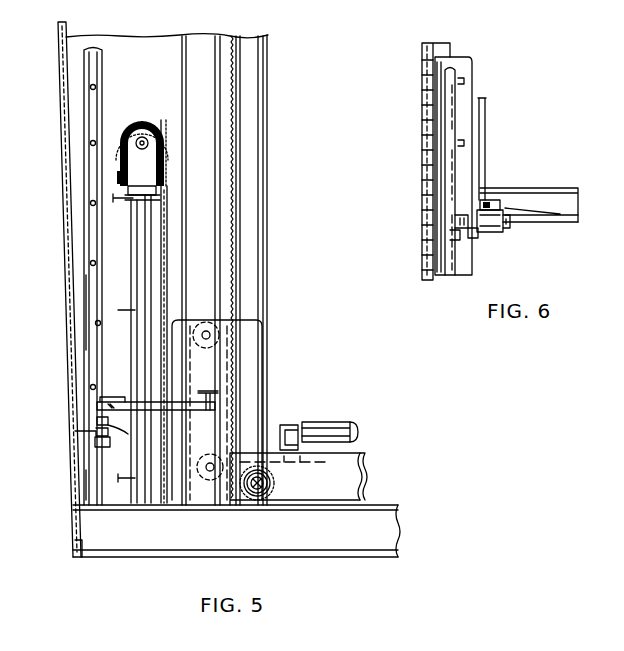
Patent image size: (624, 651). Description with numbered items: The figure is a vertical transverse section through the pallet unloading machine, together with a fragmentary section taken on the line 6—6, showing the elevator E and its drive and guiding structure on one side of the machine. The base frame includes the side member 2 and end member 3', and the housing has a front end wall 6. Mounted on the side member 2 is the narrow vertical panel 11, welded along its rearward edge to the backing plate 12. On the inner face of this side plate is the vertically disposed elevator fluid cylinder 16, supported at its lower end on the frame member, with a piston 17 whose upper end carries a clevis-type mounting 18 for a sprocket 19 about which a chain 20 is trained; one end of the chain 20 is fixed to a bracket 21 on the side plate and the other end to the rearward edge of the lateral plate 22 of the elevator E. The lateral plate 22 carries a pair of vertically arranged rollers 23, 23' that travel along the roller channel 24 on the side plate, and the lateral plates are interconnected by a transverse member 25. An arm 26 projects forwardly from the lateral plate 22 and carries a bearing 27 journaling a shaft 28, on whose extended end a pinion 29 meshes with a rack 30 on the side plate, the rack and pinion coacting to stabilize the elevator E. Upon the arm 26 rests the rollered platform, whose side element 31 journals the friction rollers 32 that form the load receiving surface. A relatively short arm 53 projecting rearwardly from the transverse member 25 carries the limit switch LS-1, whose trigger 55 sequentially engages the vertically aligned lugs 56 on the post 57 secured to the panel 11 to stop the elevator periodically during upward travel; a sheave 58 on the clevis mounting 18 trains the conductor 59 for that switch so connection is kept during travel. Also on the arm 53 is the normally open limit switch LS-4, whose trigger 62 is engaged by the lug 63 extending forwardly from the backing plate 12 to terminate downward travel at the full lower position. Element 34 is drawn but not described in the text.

In FIG. 5, the frame side member 2 is at (395, 524).
In FIG. 5, the frame end member 3' is at (95, 560).
In FIG. 5, the front end wall 6 is at (85, 313).
In FIG. 6, the vertical panel 11 is at (424, 82).
In FIG. 5, the backing plate 12 is at (60, 143).
In FIG. 5, the elevator fluid cylinder 16 is at (162, 226).
In FIG. 6, the elevator fluid cylinder 16 is at (462, 85).
In FIG. 5, the piston 17 is at (133, 181).
In FIG. 5, the clevis-type mounting 18 is at (144, 136).
In FIG. 5, the sprocket 19 is at (126, 132).
In FIG. 5, the chain 20 is at (141, 117).
In FIG. 5, the bracket 21 is at (118, 176).
In FIG. 5, the lateral plate 22 is at (183, 498).
In FIG. 5, the roller 23 is at (236, 398).
In FIG. 5, the roller 23' is at (215, 515).
In FIG. 5, the roller channel 24 is at (206, 178).
In FIG. 5, the transverse member 25 is at (215, 404).
In FIG. 6, the transverse member 25 is at (540, 189).
In FIG. 5, the arm 26 is at (328, 475).
In FIG. 5, the bearing 27 is at (257, 492).
In FIG. 5, the shaft 28 is at (262, 488).
In FIG. 5, the pinion 29 is at (270, 483).
In FIG. 5, the rack 30 is at (232, 243).
In FIG. 5, the side element 31 is at (288, 425).
In FIG. 5, the friction roller 32 is at (330, 424).
In FIG. 5, the outer rail 34 is at (269, 89).
In FIG. 5, the arm 53 is at (120, 400).
In FIG. 6, the arm 53 is at (495, 200).
In FIG. 6, the trigger 55 is at (462, 221).
In FIG. 5, the lug 56 is at (96, 326).
In FIG. 6, the lug 56 is at (455, 236).
In FIG. 5, the post 57 is at (98, 372).
In FIG. 6, the post 57 is at (438, 130).
In FIG. 5, the sheave 58 is at (158, 140).
In FIG. 5, the conductor 59 is at (136, 241).
In FIG. 6, the conductor 59 is at (486, 128).
In FIG. 5, the trigger 62 is at (97, 421).
In FIG. 6, the trigger 62 is at (560, 211).
In FIG. 5, the lug 63 is at (96, 432).
In FIG. 6, the limit switch LS-1 is at (474, 238).
In FIG. 5, the limit switch LS-4 is at (100, 440).
In FIG. 6, the limit switch LS-4 is at (510, 230).
In FIG. 5, the elevator E is at (340, 420).